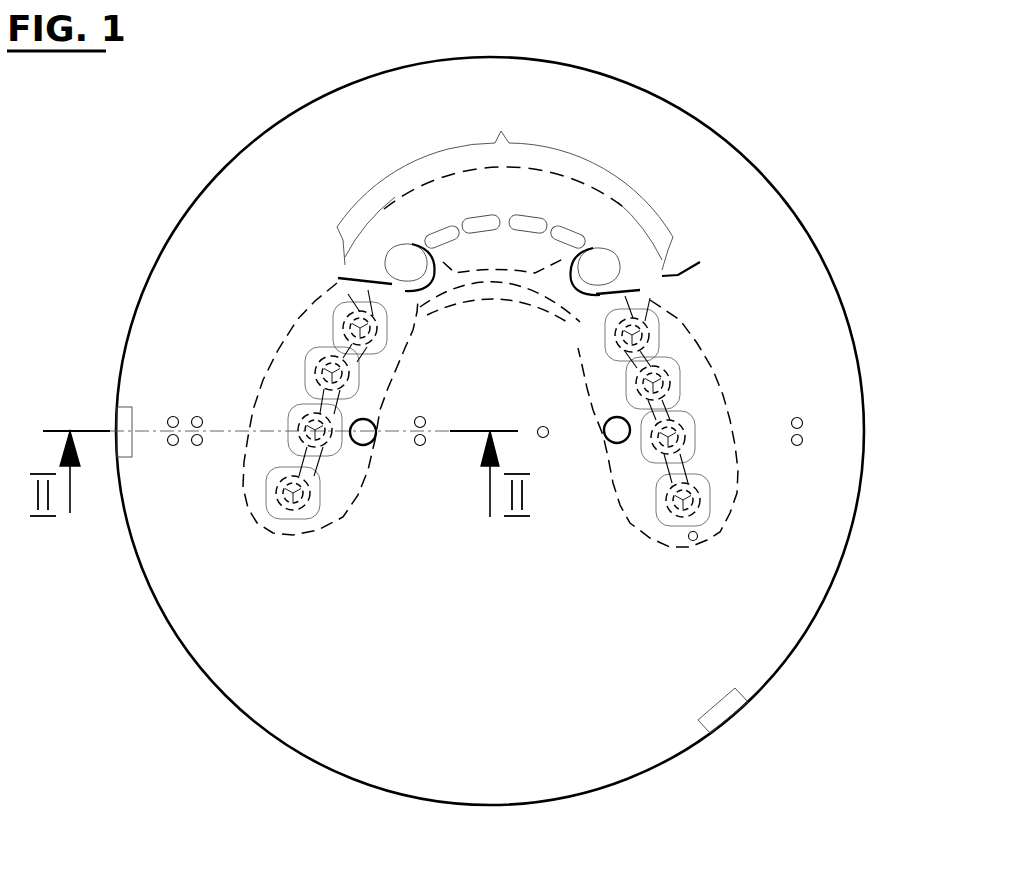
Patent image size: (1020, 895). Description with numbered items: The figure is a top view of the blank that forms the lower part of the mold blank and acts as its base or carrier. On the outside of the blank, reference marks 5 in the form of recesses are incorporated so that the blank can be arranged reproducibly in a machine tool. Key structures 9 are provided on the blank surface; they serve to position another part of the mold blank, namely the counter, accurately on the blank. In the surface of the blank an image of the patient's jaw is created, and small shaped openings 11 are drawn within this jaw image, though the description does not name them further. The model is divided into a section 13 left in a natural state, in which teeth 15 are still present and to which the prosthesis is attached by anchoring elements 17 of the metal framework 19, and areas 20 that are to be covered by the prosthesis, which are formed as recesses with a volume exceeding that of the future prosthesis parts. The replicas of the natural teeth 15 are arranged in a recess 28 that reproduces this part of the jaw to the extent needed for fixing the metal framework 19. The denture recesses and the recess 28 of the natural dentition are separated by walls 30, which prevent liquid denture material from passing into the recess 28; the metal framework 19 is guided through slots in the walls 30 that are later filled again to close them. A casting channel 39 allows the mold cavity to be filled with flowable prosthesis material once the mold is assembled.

The reference marks 5 is at (122, 422).
The key structures 9 is at (173, 442).
The tooth slot 11 is at (477, 220).
The section left in a natural state 13 is at (503, 130).
The teeth 15 is at (400, 263).
The anchoring elements 17 is at (412, 247).
The metal framework 19 is at (707, 503).
The areas to be covered by the prosthesis 20 is at (297, 320).
The recess 28 is at (662, 276).
The walls 30 is at (338, 278).
The casting channel 39 is at (373, 441).